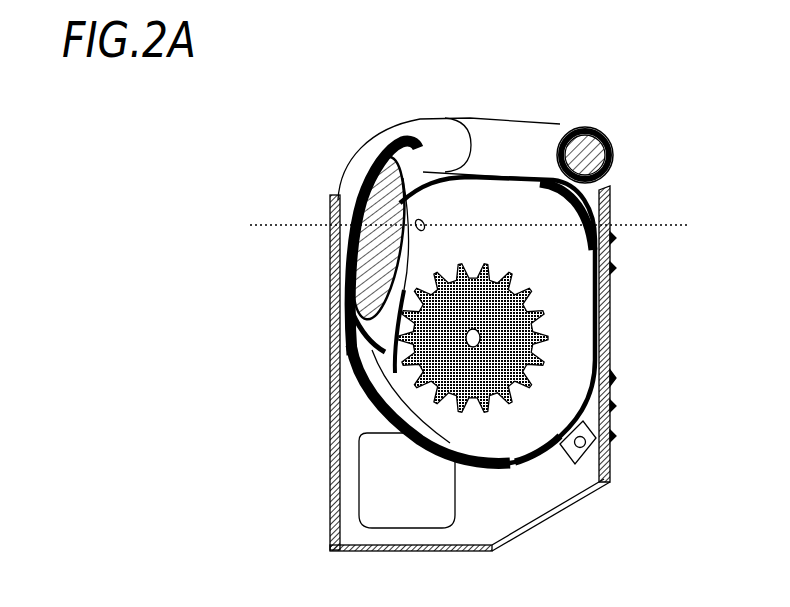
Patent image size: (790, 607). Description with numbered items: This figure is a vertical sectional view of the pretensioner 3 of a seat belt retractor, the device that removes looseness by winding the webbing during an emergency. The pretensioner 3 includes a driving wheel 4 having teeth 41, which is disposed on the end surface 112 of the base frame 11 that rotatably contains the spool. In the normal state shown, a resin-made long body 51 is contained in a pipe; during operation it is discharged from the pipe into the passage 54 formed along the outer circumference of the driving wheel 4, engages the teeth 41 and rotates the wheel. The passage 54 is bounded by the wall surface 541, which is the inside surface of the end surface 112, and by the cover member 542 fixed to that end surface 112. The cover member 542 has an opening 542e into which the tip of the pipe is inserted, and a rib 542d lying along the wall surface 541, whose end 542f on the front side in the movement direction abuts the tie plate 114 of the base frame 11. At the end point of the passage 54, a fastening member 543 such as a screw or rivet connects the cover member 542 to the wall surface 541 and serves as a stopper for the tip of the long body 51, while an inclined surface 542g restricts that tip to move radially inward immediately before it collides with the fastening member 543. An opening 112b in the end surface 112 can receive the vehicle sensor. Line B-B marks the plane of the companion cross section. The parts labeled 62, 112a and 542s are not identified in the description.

The pretensioner 3 is at (300, 135).
The driving wheel 4 is at (473, 338).
The base frame 11 is at (322, 389).
The teeth 41 is at (548, 316).
The resin-made long body 51 is at (380, 248).
The passage 54 is at (580, 342).
The supply pipe 62 is at (490, 118).
The end surface 112 is at (420, 551).
The positioning portion 112a is at (561, 444).
The opening 112b is at (364, 482).
The tie plate 114 is at (610, 451).
The wall surface 541 is at (549, 258).
The cover member 542 is at (476, 468).
The rib 542d is at (548, 456).
The opening 542e is at (355, 320).
The end 542f is at (610, 398).
The inclined surface 542g is at (425, 223).
The sheet seam 542s is at (501, 184).
The fastening member 543 is at (419, 252).
The line B- B is at (271, 238).